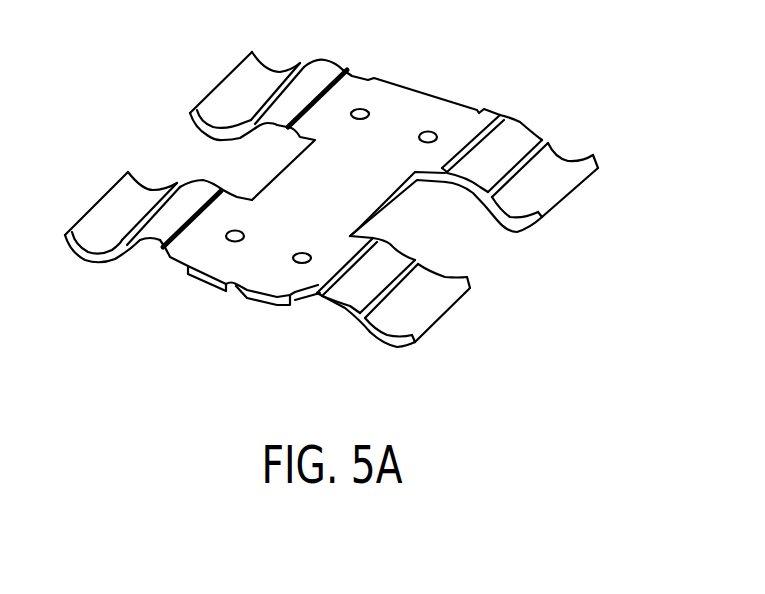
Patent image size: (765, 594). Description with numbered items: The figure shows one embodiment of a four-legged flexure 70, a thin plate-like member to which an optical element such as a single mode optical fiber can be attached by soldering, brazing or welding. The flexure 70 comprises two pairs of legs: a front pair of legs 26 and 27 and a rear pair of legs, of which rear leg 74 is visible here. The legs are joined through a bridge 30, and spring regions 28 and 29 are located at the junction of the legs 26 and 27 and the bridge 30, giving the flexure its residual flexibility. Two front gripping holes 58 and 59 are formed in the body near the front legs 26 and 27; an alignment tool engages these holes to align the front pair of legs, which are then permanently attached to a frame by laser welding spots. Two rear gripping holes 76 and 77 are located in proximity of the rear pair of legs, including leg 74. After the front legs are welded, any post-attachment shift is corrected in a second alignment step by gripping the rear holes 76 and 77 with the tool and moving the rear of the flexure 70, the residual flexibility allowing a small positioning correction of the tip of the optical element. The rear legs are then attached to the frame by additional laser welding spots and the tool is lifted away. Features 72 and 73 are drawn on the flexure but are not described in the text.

The flexure 70 is at (463, 103).
The slot in upper tab 72 is at (315, 75).
The rear leg 74 is at (240, 87).
The rear gripping hole 76 is at (362, 110).
The rear gripping hole 77 is at (428, 131).
The right curved tab 73 is at (517, 135).
The front leg 26 is at (107, 220).
The spring region 28 is at (160, 228).
The gripping hole 58 is at (233, 242).
The gripping hole 59 is at (295, 263).
The spring region 29 is at (362, 290).
The front leg 27 is at (397, 322).
The bridge 30 is at (353, 198).